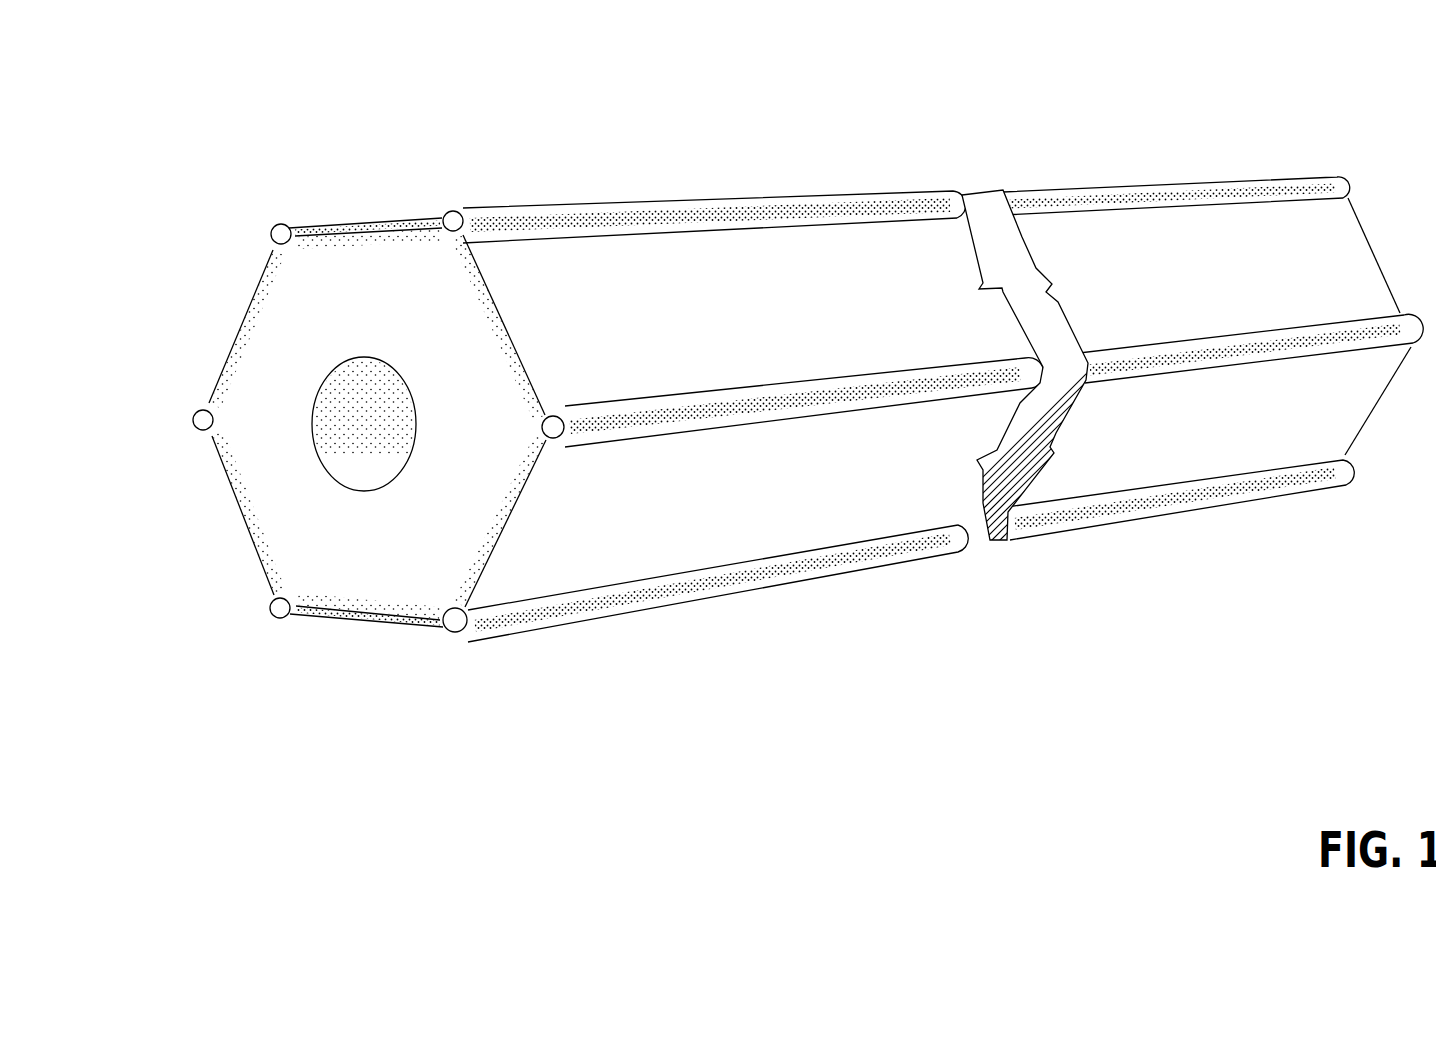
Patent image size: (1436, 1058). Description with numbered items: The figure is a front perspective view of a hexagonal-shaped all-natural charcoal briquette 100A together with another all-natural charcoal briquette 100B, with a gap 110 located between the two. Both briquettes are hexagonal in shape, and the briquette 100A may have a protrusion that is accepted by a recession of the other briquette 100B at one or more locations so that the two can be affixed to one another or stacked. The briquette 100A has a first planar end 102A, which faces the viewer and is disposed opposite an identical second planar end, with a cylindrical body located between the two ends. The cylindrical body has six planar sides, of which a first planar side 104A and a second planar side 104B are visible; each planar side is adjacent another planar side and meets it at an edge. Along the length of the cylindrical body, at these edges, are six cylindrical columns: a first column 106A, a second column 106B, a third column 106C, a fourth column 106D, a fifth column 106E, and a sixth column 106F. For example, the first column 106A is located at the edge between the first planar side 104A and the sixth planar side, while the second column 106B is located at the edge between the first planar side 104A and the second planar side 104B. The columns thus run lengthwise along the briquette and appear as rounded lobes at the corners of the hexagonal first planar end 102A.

The all-natural charcoal briquette 100A is at (553, 467).
The all-natural charcoal briquette 100B is at (1372, 627).
The first planar end 102A is at (370, 578).
The first planar side 104A is at (802, 508).
The second planar side 104B is at (758, 251).
The first column 106A is at (687, 645).
The second column 106B is at (927, 381).
The third column 106C is at (499, 217).
The fourth column 106D is at (268, 230).
The fifth column 106E is at (196, 413).
The sixth column 106F is at (270, 605).
The gap 110 is at (993, 157).